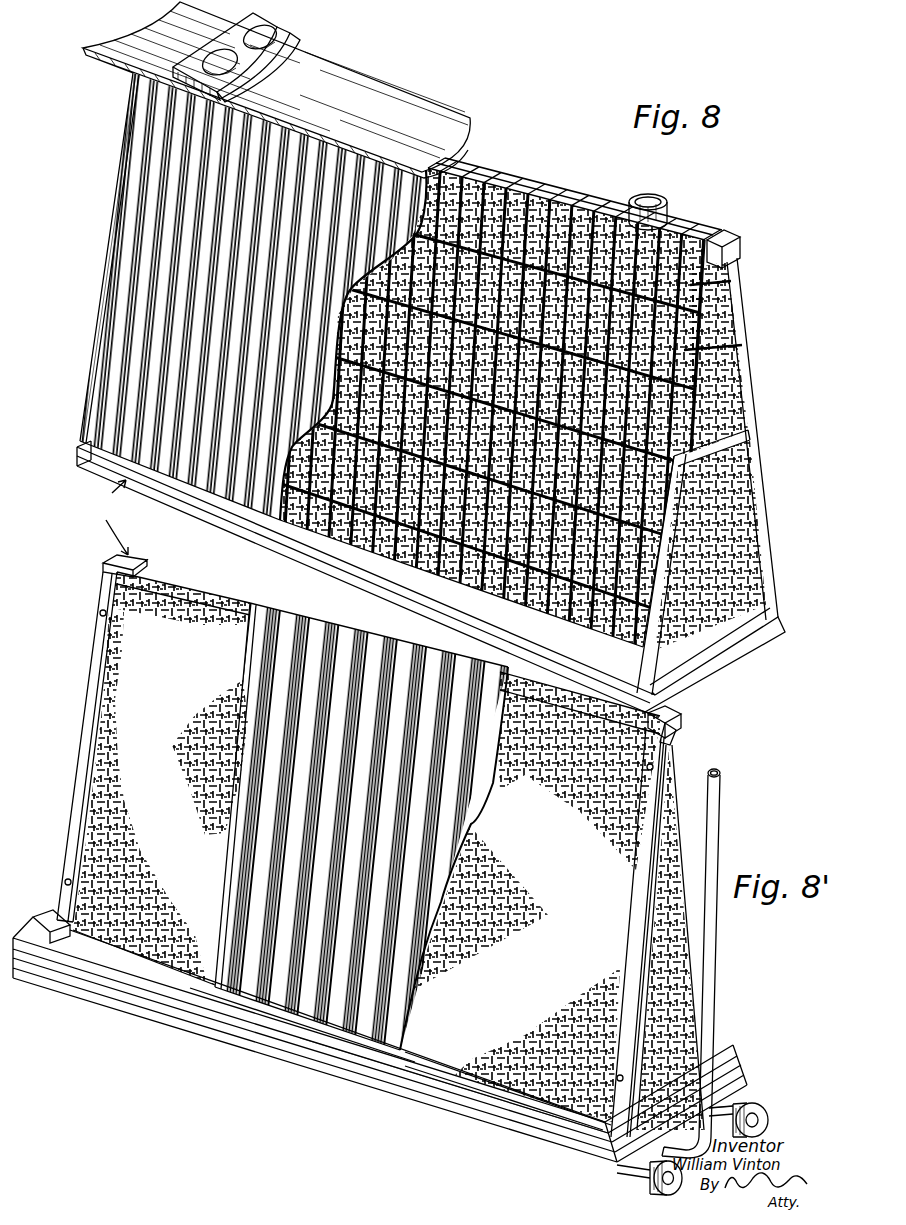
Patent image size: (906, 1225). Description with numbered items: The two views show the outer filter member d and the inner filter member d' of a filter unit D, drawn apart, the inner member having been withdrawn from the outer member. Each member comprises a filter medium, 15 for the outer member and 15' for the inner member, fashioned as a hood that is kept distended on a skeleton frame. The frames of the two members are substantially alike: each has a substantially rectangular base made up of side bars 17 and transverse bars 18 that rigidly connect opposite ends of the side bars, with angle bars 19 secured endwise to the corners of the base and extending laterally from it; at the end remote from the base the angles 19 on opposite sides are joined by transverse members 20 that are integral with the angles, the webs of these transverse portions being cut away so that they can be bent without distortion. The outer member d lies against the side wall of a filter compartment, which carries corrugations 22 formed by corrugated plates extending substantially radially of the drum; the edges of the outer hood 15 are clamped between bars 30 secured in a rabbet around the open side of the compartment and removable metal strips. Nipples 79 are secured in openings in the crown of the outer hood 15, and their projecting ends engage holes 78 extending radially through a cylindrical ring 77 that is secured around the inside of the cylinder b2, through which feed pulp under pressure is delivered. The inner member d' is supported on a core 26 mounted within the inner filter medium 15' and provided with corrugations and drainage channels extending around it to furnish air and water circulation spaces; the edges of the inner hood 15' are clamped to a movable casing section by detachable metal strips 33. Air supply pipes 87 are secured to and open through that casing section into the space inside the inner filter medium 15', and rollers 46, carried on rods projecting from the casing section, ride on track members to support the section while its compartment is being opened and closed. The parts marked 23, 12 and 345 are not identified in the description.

In FIG. 8, the cylinder b2 is at (403, 102).
In FIG. 8, the cylindrical ring 77 is at (296, 43).
In FIG. 8, the holes or openings 78 is at (275, 26).
In FIG. 8, the corrugations 22 is at (118, 203).
In FIG. 8', the corrugations 22 is at (367, 642).
In FIG. 8, the outer filter member d is at (90, 258).
In FIG. 8, the grid panel 23 is at (500, 162).
In FIG. 8, the nipples 79 is at (668, 198).
In FIG. 8, the transverse members 20 is at (728, 233).
In FIG. 8', the transverse members 20 is at (103, 563).
In FIG. 8, the filter medium 15 is at (707, 456).
In FIG. 8, the angle bars 19 is at (757, 466).
In FIG. 8', the angle bars 19 is at (88, 726).
In FIG. 8, the transverse bars 18 is at (700, 648).
In FIG. 8', the transverse bars 18 is at (48, 917).
In FIG. 8, the bars 30 is at (190, 500).
In FIG. 8, the side bars 17 is at (332, 555).
In FIG. 8', the side bars 17 is at (195, 1003).
In FIG. 8, the filter unit D is at (104, 517).
In FIG. 8', the inner filter medium 15' is at (366, 848).
In FIG. 8', the core 26 is at (300, 1042).
In FIG. 8', the detachable metal strips 33 is at (422, 1080).
In FIG. 8', the base slab 12 is at (492, 1122).
In FIG. 8', the inner filter member d' is at (711, 939).
In FIG. 8', the pipes 87 is at (710, 1024).
In FIG. 8', the rollers 46 is at (770, 1110).
In FIG. 8', the axle assembly 345 is at (735, 1102).